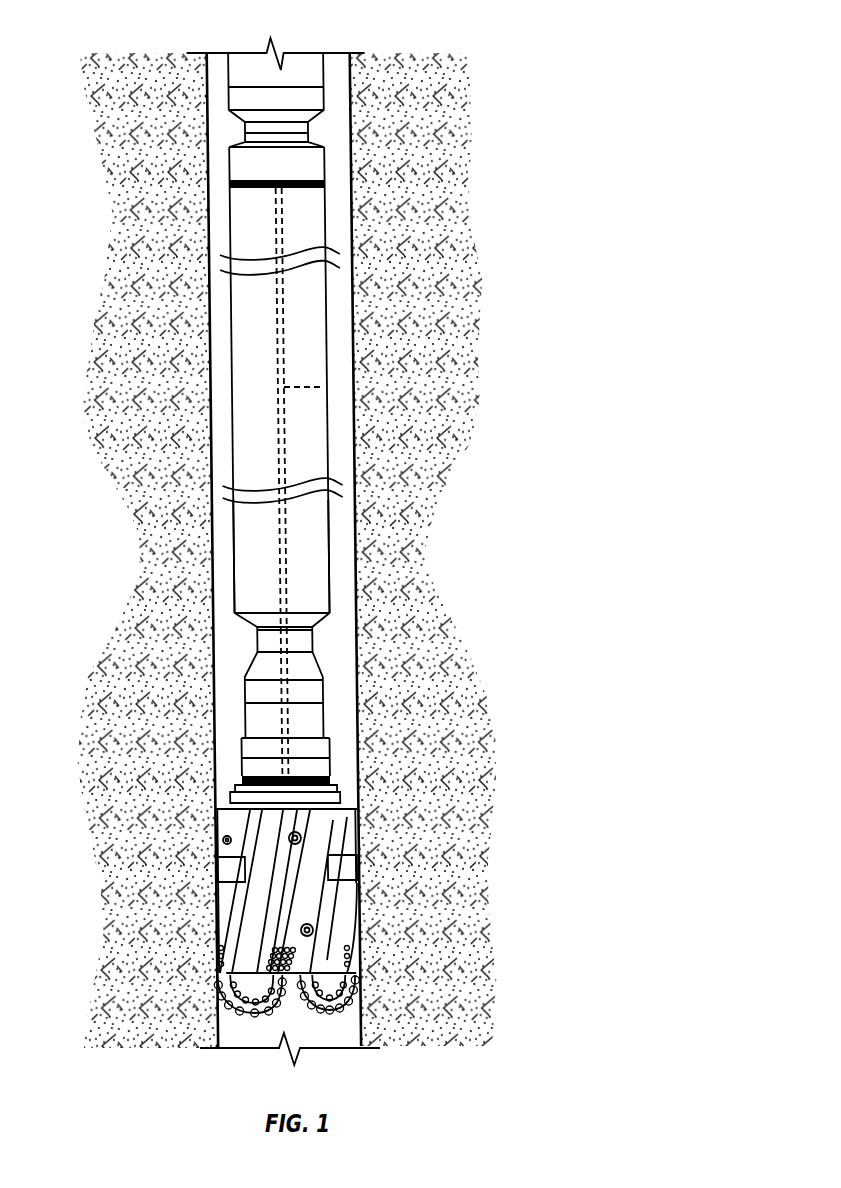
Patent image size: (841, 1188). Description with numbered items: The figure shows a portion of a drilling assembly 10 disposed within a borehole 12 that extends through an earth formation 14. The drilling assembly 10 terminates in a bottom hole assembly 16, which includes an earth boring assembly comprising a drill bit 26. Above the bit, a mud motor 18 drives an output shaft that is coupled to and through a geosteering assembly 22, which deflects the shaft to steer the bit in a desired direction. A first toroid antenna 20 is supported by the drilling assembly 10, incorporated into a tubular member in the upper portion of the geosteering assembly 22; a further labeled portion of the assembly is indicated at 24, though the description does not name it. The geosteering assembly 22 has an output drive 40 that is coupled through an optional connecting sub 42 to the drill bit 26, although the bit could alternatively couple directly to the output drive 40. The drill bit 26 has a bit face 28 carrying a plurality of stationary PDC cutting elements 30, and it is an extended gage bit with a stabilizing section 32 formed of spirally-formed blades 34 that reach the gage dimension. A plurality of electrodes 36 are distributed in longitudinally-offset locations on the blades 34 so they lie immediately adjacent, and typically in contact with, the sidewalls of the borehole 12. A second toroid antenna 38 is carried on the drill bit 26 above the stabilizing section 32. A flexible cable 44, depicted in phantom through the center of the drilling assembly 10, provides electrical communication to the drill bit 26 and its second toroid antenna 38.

The drilling assembly 10 is at (336, 66).
The borehole 12 is at (353, 270).
The earth formation 14 is at (420, 257).
The bottom hole assembly 16 is at (276, 684).
The mud motor 18 is at (327, 165).
The first toroid antenna 20 is at (327, 205).
The geosteering assembly 22 is at (327, 362).
The lower end of drill collar 24 is at (334, 608).
The drill bit 26 is at (335, 812).
The bit face 28 is at (346, 1015).
The cutting elements 30 is at (355, 982).
The stabilizing section 32 is at (320, 916).
The stabilizer blades 34 is at (325, 897).
The electrodes 36 is at (303, 838).
The second toroid antenna 38 is at (240, 782).
The output drive 40 is at (257, 640).
The connecting sub 42 is at (245, 693).
The flexible cable 44 is at (327, 385).